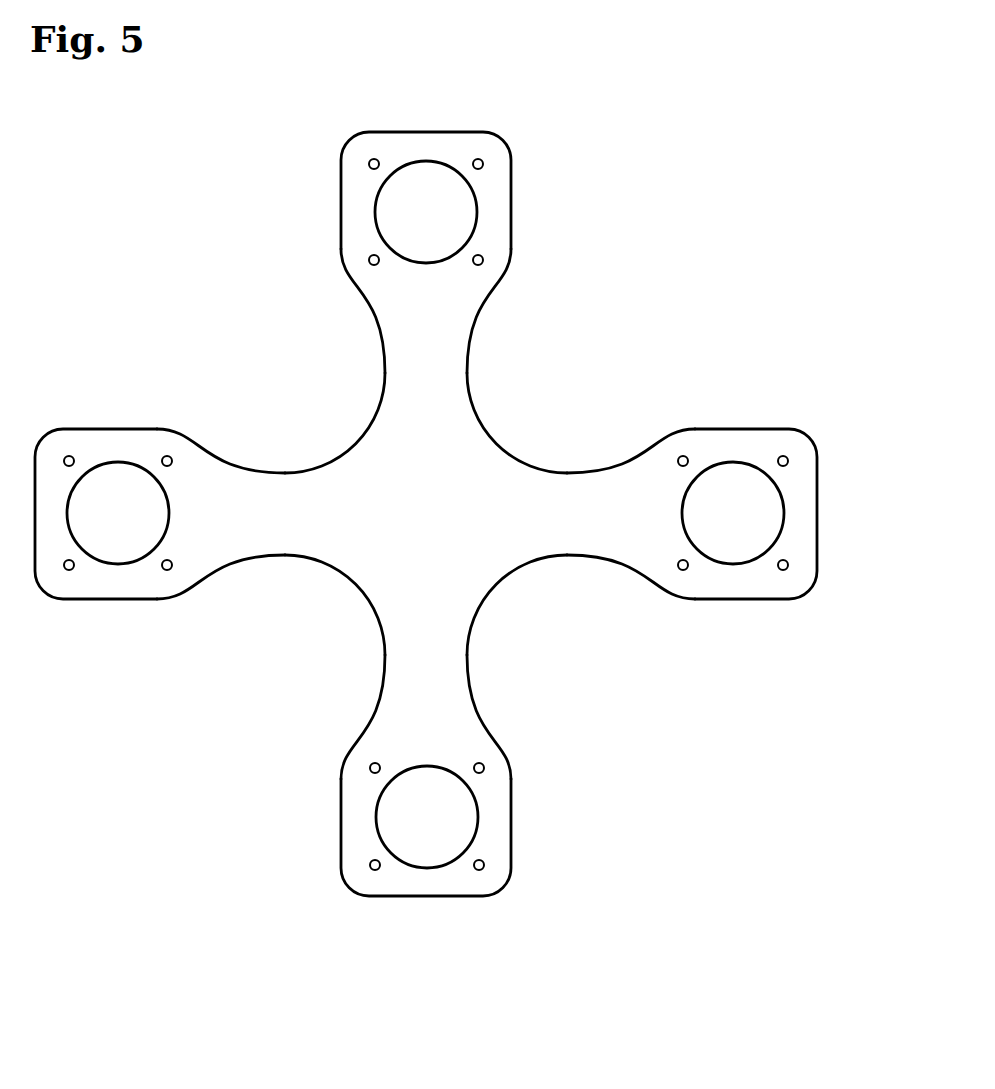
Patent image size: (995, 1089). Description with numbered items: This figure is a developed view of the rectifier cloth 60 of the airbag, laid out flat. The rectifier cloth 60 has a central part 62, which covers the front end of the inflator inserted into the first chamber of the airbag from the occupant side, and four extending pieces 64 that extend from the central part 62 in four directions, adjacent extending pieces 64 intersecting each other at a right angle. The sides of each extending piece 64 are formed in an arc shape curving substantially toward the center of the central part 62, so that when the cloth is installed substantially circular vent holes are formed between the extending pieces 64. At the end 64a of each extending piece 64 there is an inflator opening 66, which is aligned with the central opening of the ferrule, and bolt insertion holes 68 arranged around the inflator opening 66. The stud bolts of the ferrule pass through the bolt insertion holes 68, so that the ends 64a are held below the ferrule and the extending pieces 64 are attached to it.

The rectifier cloth 60 is at (563, 237).
The central part 62 is at (460, 546).
The extending piece 64 is at (462, 329).
The end of the extending piece 64a is at (340, 194).
The inflator opening 66 is at (416, 174).
The bolt insertion hole 68 is at (374, 159).